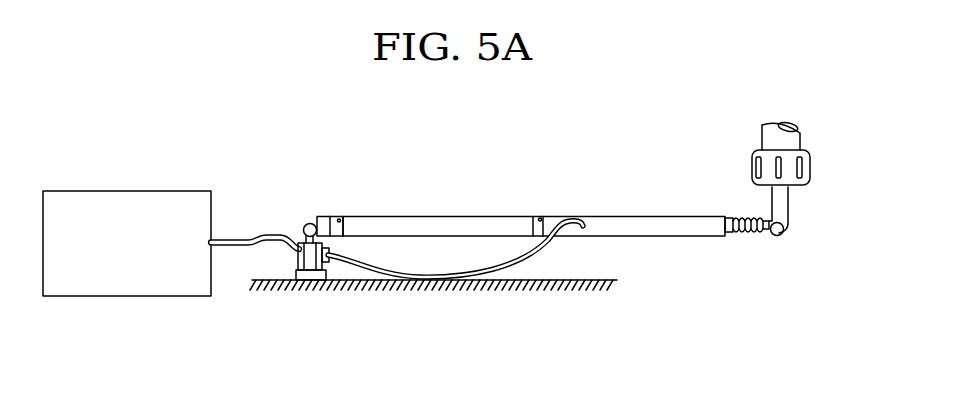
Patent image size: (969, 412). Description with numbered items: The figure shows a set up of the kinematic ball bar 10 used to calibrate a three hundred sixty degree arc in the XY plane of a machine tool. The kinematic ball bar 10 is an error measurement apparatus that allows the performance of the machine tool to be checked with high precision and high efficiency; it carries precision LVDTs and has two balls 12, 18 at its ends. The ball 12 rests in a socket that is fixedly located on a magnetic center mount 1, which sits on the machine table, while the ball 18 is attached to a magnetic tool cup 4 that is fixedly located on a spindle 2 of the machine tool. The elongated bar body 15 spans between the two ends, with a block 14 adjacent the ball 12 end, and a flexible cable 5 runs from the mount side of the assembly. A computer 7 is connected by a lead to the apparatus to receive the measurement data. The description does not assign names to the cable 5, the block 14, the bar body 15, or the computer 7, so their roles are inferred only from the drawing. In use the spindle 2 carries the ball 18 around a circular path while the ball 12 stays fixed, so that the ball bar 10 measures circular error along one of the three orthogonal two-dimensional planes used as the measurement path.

The magnetic center mount 1 is at (297, 274).
The spindle 2 is at (801, 133).
The magnetic tool cup 4 is at (790, 201).
The cable 5 is at (549, 250).
The computer 7 is at (142, 296).
The kinematic ball bar 10 is at (582, 204).
The ball 12 is at (303, 225).
The sensor block 14 is at (322, 222).
The arm tube 15 is at (487, 216).
The ball 18 is at (779, 236).